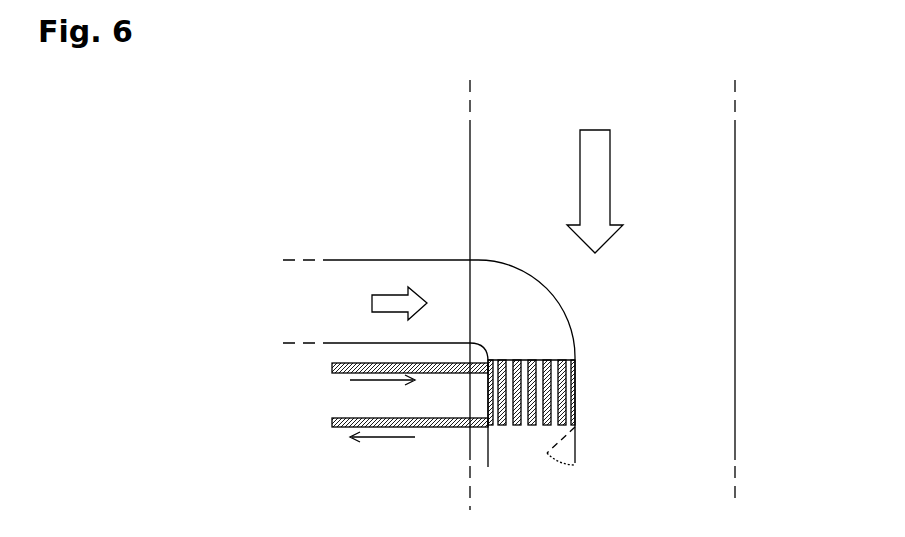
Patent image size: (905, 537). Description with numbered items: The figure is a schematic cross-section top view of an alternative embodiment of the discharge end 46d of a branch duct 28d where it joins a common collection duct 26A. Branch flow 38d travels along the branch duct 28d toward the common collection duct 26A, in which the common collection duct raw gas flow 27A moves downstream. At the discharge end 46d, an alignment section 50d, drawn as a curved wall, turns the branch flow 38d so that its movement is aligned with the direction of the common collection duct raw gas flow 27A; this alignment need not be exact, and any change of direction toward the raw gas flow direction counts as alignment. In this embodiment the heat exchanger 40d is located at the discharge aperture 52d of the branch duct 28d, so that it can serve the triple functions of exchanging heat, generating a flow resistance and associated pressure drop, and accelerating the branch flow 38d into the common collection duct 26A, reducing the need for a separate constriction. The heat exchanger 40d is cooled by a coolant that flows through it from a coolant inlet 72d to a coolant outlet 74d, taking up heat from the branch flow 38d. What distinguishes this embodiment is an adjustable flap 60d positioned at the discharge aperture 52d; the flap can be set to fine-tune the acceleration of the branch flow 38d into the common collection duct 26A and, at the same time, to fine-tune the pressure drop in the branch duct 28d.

The discharge end 46d is at (443, 148).
The common collection duct raw gas flow 27A is at (582, 193).
The branch duct 28d is at (350, 258).
The branch flow 38d is at (378, 303).
The alignment section 50d is at (523, 310).
The heat exchanger 40d is at (537, 384).
The adjustable flap 60d is at (578, 440).
The discharge aperture 52d is at (533, 467).
The coolant inlet 72d is at (379, 372).
The coolant outlet 74d is at (376, 425).
The common collection duct 26A is at (725, 298).